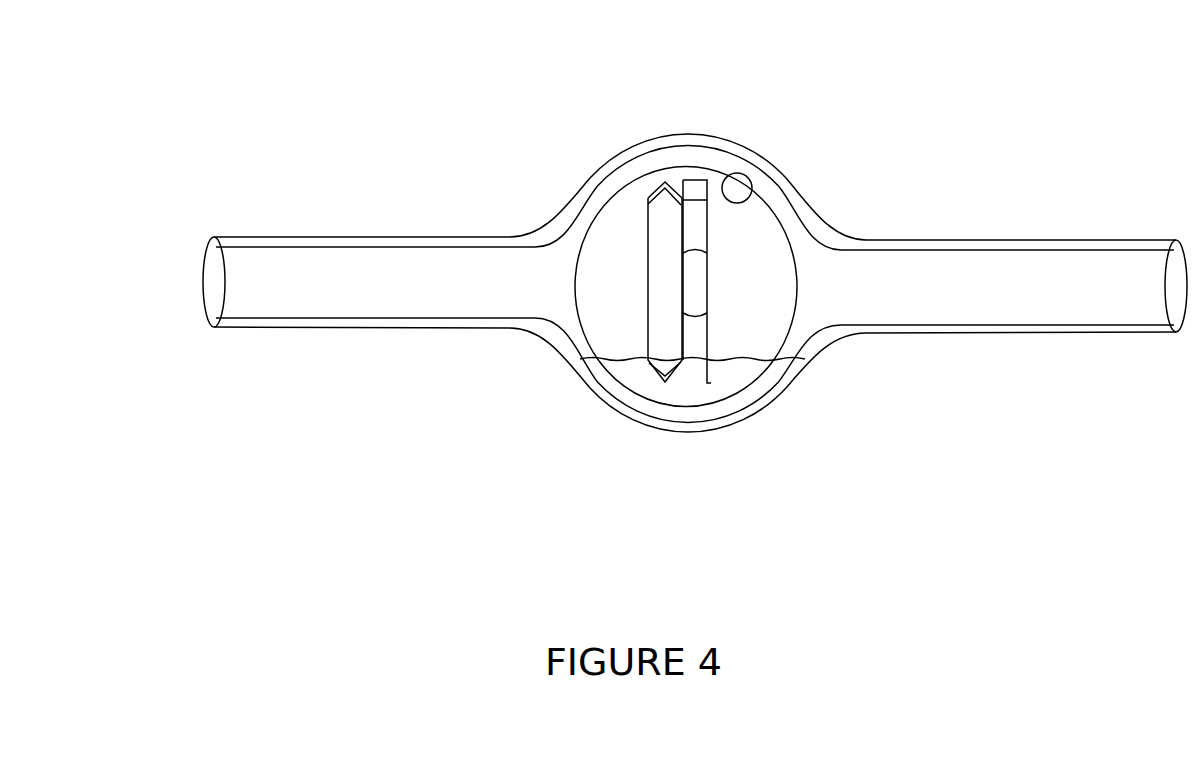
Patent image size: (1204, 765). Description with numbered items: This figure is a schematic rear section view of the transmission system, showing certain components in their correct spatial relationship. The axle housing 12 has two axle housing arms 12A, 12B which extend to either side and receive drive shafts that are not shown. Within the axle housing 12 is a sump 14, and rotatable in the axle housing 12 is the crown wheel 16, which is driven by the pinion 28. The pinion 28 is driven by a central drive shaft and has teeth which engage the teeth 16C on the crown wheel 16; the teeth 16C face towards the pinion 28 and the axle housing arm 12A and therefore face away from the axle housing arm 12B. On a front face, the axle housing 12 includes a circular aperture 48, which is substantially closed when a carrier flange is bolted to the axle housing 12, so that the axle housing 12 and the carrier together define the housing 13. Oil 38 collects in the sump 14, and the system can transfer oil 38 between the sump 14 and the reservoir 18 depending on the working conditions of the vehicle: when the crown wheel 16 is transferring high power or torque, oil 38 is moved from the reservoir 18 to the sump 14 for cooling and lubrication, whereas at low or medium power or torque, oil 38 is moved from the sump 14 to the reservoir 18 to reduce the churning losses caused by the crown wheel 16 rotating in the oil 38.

The axle housing 12 is at (668, 133).
The axle housing arm 12A is at (1067, 335).
The axle housing arm 12B is at (325, 332).
The housing 13 is at (821, 121).
The sump 14 is at (643, 391).
The crown wheel 16 is at (652, 225).
The teeth 16C is at (667, 182).
The reservoir 18 is at (767, 257).
The pinion 28 is at (690, 261).
The oil 38 is at (737, 403).
The circular aperture 48 is at (755, 203).